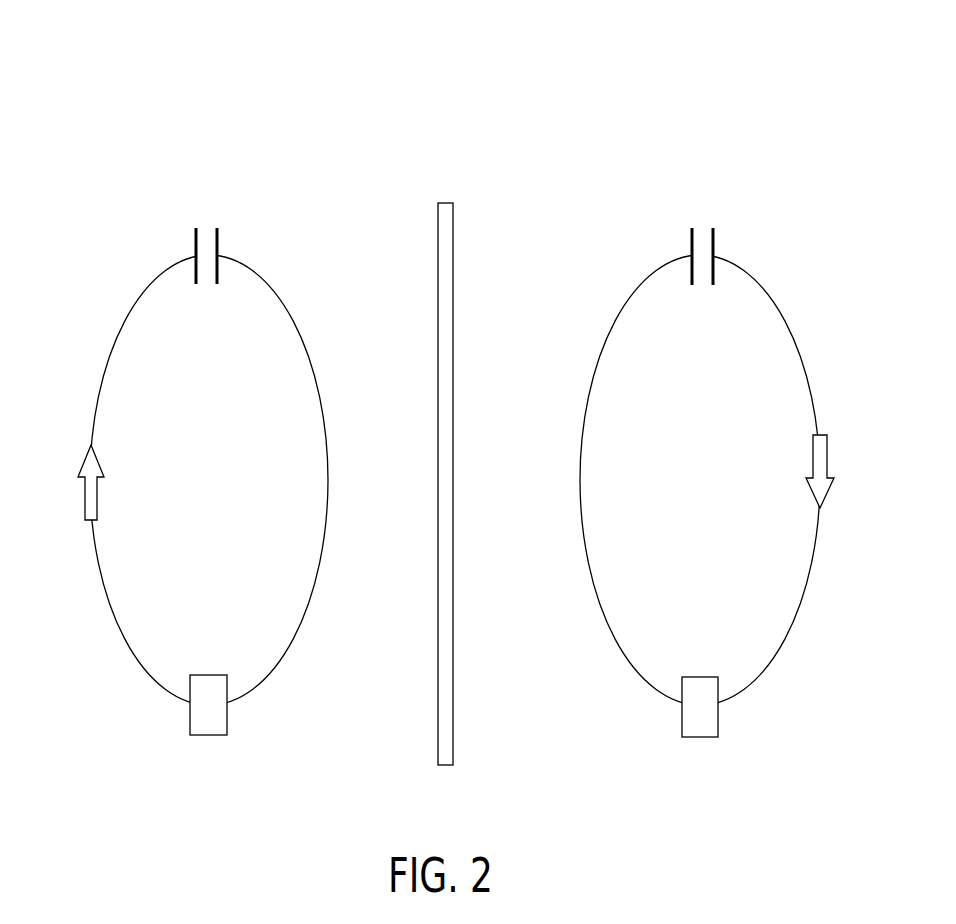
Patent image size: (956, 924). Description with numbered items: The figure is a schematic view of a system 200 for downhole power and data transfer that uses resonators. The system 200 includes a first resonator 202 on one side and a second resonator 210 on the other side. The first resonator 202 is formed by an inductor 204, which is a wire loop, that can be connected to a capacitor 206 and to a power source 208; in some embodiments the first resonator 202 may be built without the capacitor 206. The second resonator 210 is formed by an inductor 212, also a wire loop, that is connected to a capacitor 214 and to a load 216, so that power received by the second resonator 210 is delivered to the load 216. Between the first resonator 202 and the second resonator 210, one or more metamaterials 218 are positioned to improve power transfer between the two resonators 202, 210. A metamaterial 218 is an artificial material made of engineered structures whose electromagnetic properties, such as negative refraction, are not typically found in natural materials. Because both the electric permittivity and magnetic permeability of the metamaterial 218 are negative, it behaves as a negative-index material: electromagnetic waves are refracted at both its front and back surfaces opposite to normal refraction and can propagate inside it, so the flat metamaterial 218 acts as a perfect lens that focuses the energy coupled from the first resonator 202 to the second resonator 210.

The system for downhole power and data transfer 200 is at (756, 70).
The first resonator 202 is at (133, 302).
The inductor 204 is at (111, 612).
The capacitor 206 is at (221, 243).
The power source 208 is at (228, 725).
The second resonator 210 is at (777, 307).
The inductor 212 is at (805, 615).
The capacitor 214 is at (689, 243).
The load 216 is at (719, 725).
The metamaterial 218 is at (454, 727).